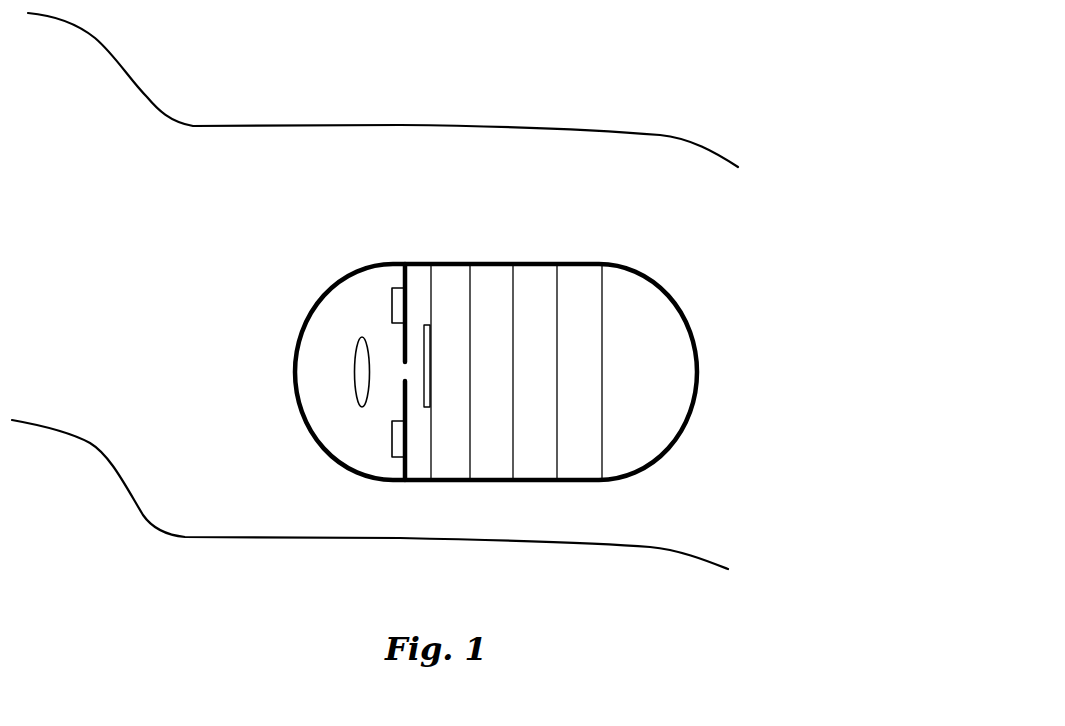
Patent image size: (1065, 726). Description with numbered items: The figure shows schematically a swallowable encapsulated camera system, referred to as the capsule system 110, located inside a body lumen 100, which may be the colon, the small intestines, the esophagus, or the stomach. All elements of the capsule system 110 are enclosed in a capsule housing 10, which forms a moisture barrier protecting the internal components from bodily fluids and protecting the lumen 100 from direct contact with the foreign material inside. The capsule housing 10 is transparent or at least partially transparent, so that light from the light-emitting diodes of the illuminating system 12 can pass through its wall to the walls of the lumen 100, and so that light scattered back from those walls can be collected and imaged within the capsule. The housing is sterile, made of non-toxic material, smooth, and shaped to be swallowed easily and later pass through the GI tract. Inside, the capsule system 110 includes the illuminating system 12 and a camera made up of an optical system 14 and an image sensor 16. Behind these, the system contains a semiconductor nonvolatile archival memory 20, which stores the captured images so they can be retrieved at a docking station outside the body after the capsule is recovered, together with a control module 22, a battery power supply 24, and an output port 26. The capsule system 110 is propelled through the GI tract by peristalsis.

The capsule housing 10 is at (316, 310).
The illuminating system 12 is at (392, 300).
The optical system 14 is at (357, 373).
The image sensor 16 is at (426, 326).
The archival memory 20 is at (452, 280).
The control module 22 is at (492, 280).
The battery power supply 24 is at (533, 280).
The output port 26 is at (572, 280).
The body lumen 100 is at (160, 528).
The capsule system 110 is at (750, 363).